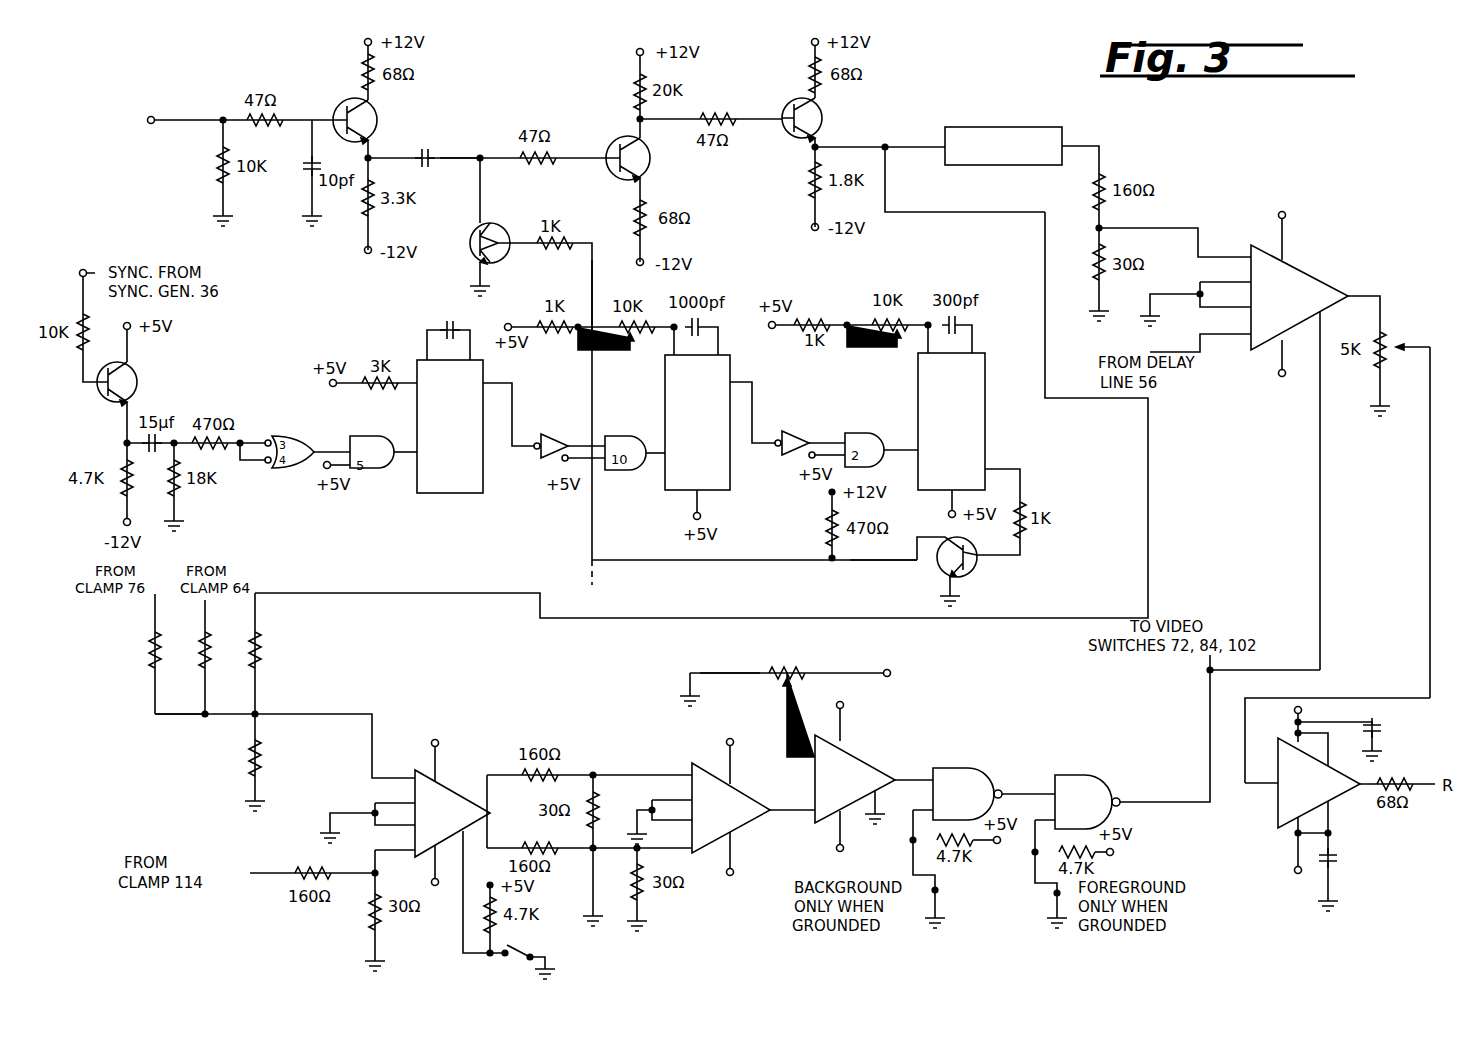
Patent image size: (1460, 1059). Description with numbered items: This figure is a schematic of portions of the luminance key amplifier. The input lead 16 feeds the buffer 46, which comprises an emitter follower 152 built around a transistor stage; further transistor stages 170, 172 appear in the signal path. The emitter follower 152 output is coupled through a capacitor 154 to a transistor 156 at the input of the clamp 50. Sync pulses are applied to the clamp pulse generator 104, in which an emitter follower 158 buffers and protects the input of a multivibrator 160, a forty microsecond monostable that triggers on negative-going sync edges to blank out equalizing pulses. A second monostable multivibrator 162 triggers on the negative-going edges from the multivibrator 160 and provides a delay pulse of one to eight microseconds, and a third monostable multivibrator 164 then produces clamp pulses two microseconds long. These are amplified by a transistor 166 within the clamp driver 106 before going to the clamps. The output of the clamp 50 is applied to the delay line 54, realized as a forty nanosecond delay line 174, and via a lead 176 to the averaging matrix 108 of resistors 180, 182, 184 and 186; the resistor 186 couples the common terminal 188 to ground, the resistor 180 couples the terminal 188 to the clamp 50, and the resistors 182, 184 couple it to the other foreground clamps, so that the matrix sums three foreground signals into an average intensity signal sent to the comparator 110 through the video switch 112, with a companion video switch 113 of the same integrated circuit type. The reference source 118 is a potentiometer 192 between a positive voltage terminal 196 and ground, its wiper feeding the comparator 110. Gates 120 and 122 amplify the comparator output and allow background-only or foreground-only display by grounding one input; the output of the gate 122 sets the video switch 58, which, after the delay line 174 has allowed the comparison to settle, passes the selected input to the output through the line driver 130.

The input lead 16 is at (190, 117).
The buffer 46 is at (428, 126).
The clamp 50 is at (586, 212).
The delay line 54 is at (1014, 206).
The video switch 58 is at (1312, 278).
The clamp pulse generator 104 is at (768, 510).
The clamp driver 106 is at (1020, 602).
The averaging matrix 108 is at (170, 760).
The comparator 110 is at (856, 814).
The video switch 112 is at (456, 770).
The video switch 113 is at (746, 822).
The reference source 118 is at (742, 706).
The gate 120 is at (970, 756).
The gate 122 is at (1085, 776).
The line driver 130 is at (1338, 772).
The emitter follower 152 is at (338, 104).
The capacitor 154 is at (429, 170).
The transistor 156 is at (498, 258).
The emitter follower 158 is at (172, 390).
The multivibrator 160 is at (440, 493).
The second monostable multivibrator 162 is at (730, 363).
The third monostable multivibrator 164 is at (985, 426).
The transistor 166 is at (938, 578).
The amplifier transistor 170 is at (610, 137).
The amplifier transistor 172 is at (820, 122).
The delay line 174 is at (996, 126).
The lead 176 is at (1045, 258).
The resistor 180 is at (262, 638).
The resistor 182 is at (198, 636).
The resistor 184 is at (150, 636).
The resistor 186 is at (258, 746).
The common terminal 188 is at (255, 714).
The potentiometer 192 is at (800, 662).
The positive voltage terminal 196 is at (889, 677).